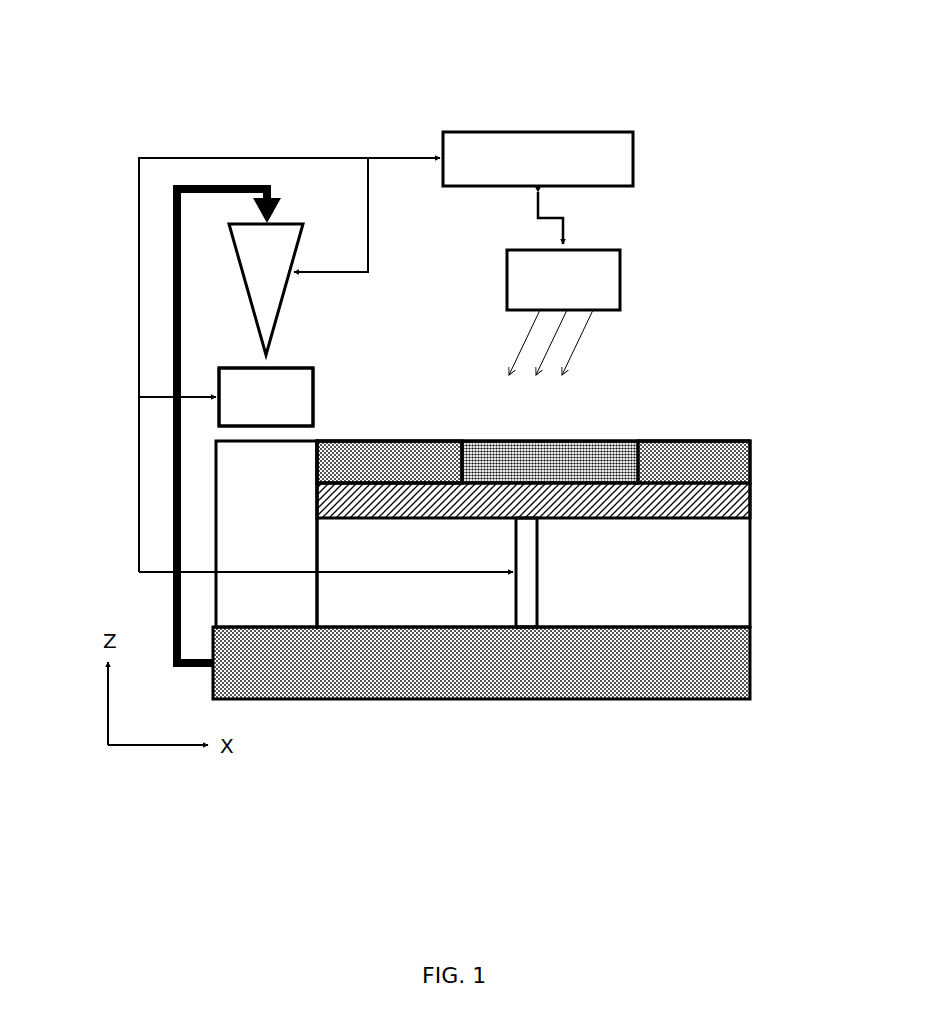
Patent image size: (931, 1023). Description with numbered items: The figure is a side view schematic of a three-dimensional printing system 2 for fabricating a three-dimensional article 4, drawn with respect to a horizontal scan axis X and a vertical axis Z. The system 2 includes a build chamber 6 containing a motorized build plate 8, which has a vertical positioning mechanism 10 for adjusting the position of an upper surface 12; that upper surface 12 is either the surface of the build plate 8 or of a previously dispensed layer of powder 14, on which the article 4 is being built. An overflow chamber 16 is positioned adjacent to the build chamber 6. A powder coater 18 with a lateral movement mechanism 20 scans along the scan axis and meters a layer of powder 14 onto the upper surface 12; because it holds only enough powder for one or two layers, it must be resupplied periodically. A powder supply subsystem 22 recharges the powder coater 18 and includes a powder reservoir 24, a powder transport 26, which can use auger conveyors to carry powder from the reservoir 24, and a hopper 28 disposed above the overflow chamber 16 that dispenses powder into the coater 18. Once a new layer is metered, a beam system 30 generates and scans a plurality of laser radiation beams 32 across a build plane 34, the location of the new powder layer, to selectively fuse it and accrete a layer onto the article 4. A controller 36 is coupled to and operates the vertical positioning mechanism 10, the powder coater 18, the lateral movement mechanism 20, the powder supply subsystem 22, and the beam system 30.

The three-dimensional printing system 2 is at (542, 62).
The three-dimensional article 4 is at (597, 453).
The build chamber 6 is at (750, 533).
The motorized build plate 8 is at (750, 503).
The vertical positioning mechanism 10 is at (537, 572).
The upper surface 12 is at (708, 483).
The powder 14 is at (423, 458).
The overflow chamber 16 is at (250, 542).
The powder coater 18 is at (315, 397).
The lateral movement mechanism 20 is at (266, 397).
The powder supply subsystem 22 is at (259, 134).
The powder reservoir 24 is at (733, 659).
The powder transport 26 is at (173, 318).
The hopper 28 is at (247, 293).
The beam system 30 is at (620, 275).
The laser radiation beams 32 is at (583, 336).
The build plane 34 is at (688, 438).
The controller 36 is at (636, 160).